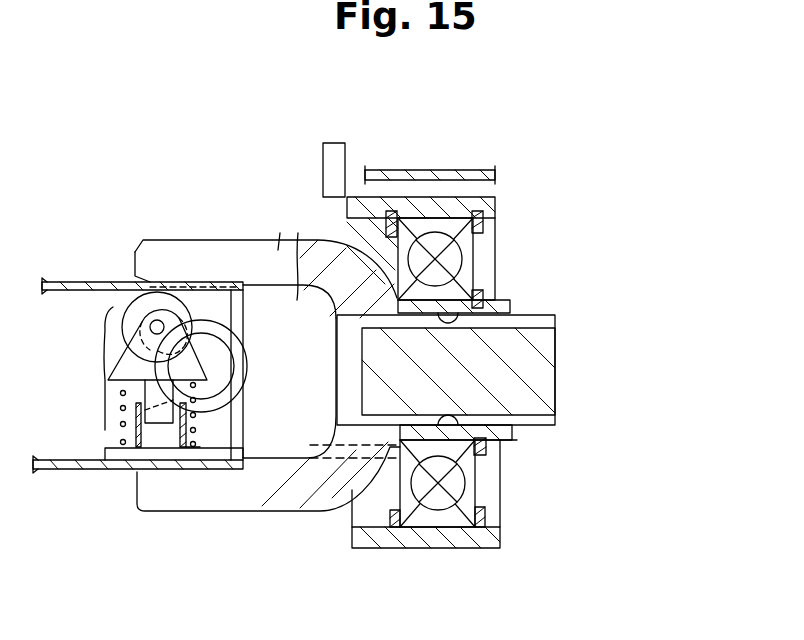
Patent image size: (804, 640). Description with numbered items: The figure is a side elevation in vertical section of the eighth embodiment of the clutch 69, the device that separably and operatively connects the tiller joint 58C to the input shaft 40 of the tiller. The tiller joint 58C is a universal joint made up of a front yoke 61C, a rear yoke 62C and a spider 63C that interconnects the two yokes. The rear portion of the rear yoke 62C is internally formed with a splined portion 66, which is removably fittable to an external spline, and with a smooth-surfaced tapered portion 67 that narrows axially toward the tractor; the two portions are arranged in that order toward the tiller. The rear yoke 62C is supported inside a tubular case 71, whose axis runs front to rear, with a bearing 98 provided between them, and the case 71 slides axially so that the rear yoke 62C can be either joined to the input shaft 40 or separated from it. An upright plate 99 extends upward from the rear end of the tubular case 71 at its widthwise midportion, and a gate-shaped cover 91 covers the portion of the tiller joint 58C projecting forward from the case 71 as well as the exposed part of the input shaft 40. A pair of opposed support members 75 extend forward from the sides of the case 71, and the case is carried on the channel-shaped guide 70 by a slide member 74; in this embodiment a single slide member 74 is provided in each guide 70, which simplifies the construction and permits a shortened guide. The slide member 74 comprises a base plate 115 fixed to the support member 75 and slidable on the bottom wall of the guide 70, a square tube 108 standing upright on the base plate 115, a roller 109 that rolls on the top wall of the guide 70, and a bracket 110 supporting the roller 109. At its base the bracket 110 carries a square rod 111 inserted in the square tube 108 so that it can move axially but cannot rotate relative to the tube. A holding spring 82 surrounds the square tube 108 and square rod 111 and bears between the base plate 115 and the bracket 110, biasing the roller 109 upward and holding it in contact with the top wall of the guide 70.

The input shaft 40 is at (538, 378).
The tiller joint 58C is at (244, 236).
The front yoke 61C is at (104, 398).
The rear yoke 62C is at (287, 253).
The spider 63C is at (210, 311).
The splined portion 66 is at (527, 318).
The tapered portion 67 is at (512, 306).
The clutch 69 is at (92, 478).
The guide 70 is at (112, 284).
The tubular case 71 is at (453, 537).
The slide member 74 is at (116, 347).
The support member 75 is at (315, 450).
The holding spring 82 is at (195, 449).
The gate-shaped cover 91 is at (424, 176).
The bearing 98 is at (430, 512).
The upright plate 99 is at (345, 148).
The square tube 108 is at (137, 428).
The roller 109 is at (167, 298).
The bracket 110 is at (190, 366).
The square rod 111 is at (184, 408).
The base plate 115 is at (148, 454).